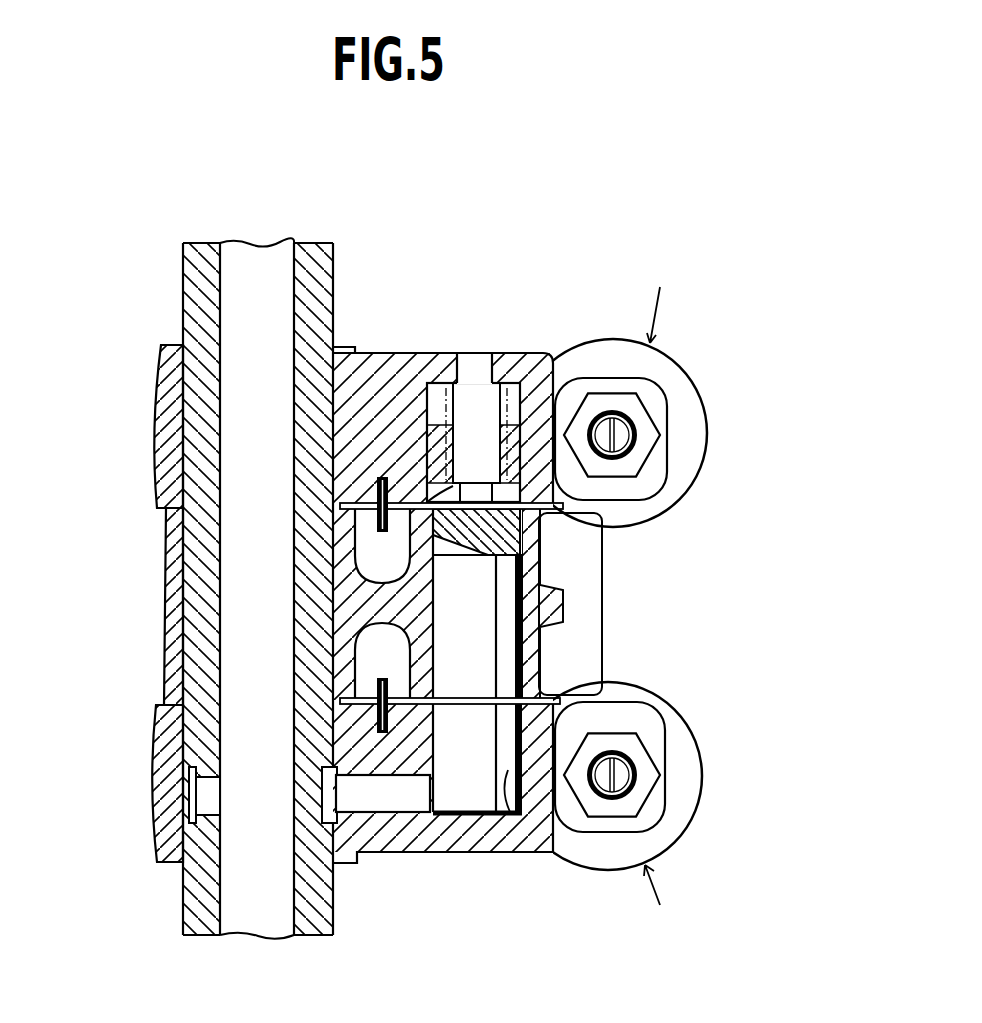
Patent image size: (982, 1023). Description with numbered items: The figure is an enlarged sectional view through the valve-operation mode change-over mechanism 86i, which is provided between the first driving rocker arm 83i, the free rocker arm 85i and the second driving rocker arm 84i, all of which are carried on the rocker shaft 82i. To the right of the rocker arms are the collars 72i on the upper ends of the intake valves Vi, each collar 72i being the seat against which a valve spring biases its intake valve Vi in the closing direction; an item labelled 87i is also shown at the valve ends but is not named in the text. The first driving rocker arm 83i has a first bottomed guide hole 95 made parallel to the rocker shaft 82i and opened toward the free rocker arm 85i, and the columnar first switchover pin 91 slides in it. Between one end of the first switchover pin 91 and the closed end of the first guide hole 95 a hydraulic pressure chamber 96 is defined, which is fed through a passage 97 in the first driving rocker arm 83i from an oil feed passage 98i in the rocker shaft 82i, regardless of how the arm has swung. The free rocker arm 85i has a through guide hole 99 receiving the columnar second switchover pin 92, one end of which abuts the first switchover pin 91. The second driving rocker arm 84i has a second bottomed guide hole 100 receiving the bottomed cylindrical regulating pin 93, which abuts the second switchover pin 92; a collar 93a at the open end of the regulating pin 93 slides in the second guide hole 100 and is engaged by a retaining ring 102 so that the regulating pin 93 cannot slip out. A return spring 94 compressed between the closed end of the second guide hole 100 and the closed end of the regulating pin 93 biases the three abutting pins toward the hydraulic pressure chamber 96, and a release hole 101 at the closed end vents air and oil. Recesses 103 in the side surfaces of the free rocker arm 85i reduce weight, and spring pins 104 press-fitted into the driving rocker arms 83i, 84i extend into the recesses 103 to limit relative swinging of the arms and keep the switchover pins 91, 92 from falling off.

The rocker shaft 82i is at (198, 937).
The oil feed passage 98i is at (265, 920).
The second driving rocker arm 84i is at (161, 383).
The free rocker arm 85i is at (165, 588).
The first driving rocker arm 83i is at (156, 773).
The valve-operation mode change-over mechanism 86i is at (460, 820).
The release hole 101 is at (462, 360).
The return spring 94 is at (500, 385).
The collar 93a is at (440, 428).
The retaining ring 102 is at (430, 452).
The spring pin 104 is at (380, 690).
The recess 103 is at (360, 645).
The second switchover pin 92 is at (482, 627).
The first switchover pin 91 is at (478, 773).
The regulating pin 93 is at (598, 540).
The guide hole 99 is at (512, 665).
The second bottomed guide hole 100 is at (558, 379).
The collar 72i is at (692, 825).
The roller shaft nuts 87i is at (633, 758).
The passage 97 is at (380, 800).
The hydraulic pressure chamber 96 is at (473, 818).
The first bottomed guide hole 95 is at (512, 822).
The intake valve Vi is at (667, 598).